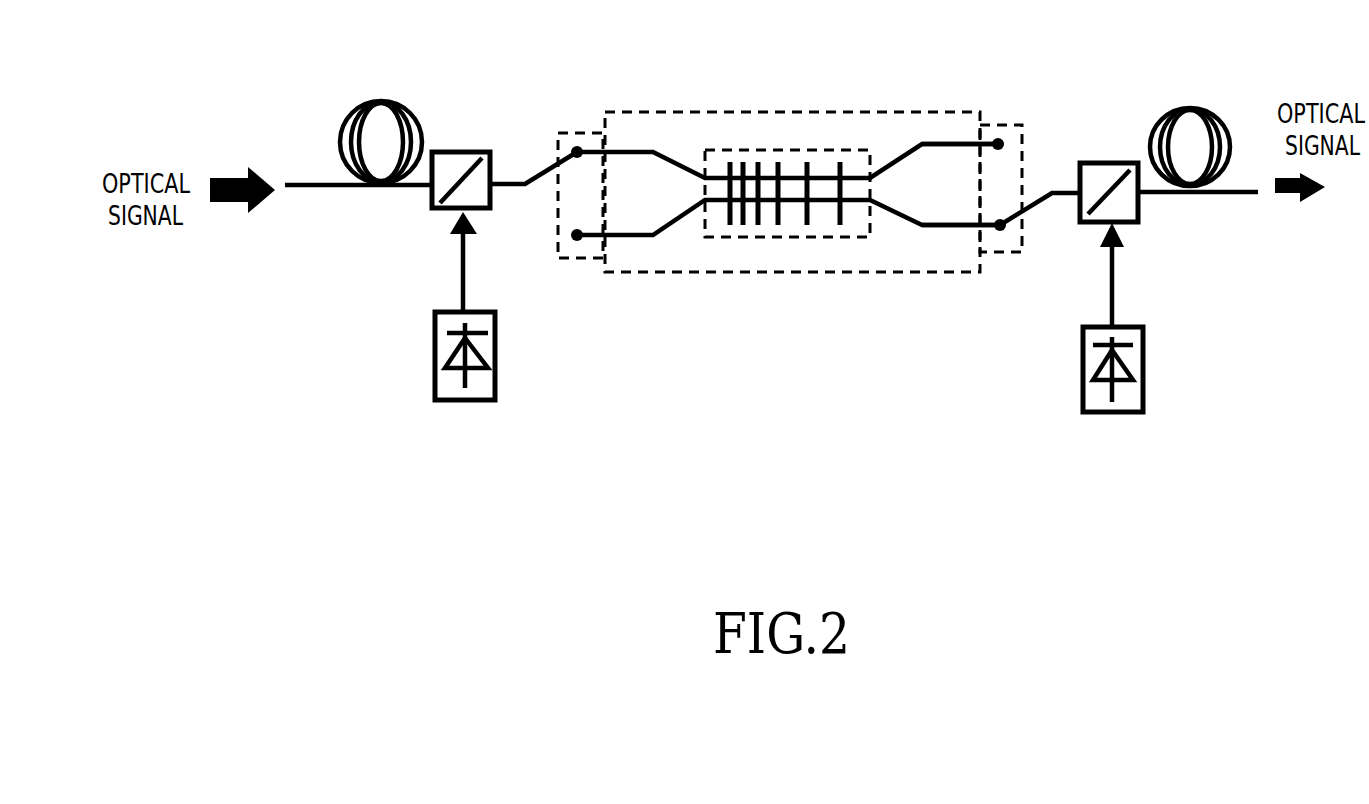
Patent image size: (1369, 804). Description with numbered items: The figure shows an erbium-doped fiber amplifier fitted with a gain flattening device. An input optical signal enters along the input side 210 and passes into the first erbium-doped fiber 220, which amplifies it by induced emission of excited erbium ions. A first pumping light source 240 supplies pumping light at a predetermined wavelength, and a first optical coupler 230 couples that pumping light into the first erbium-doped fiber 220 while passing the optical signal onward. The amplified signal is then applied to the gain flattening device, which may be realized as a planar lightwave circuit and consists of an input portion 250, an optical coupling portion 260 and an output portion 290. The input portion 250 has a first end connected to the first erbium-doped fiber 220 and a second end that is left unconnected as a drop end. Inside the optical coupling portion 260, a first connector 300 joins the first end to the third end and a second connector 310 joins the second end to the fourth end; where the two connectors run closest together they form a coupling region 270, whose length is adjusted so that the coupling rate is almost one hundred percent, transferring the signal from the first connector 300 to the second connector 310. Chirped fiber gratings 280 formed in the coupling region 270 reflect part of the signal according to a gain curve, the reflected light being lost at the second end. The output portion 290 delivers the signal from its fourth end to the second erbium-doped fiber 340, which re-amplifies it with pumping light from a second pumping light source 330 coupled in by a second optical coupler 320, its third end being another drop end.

The input optical fiber 210 is at (308, 182).
The first erbium-doped fiber 220 is at (387, 100).
The first optical coupler 230 is at (470, 150).
The first pumping light source 240 is at (495, 367).
The input portion 250 is at (575, 133).
The optical coupling portion 260 is at (713, 110).
The coupling region 270 is at (870, 150).
The chirped fiber gratings 280 is at (779, 162).
The output portion 290 is at (1017, 123).
The first connector 300 is at (955, 142).
The second connector 310 is at (965, 230).
The second optical coupler 320 is at (1108, 163).
The second pumping light source 330 is at (1083, 368).
The second erbium-doped fiber 340 is at (1197, 107).